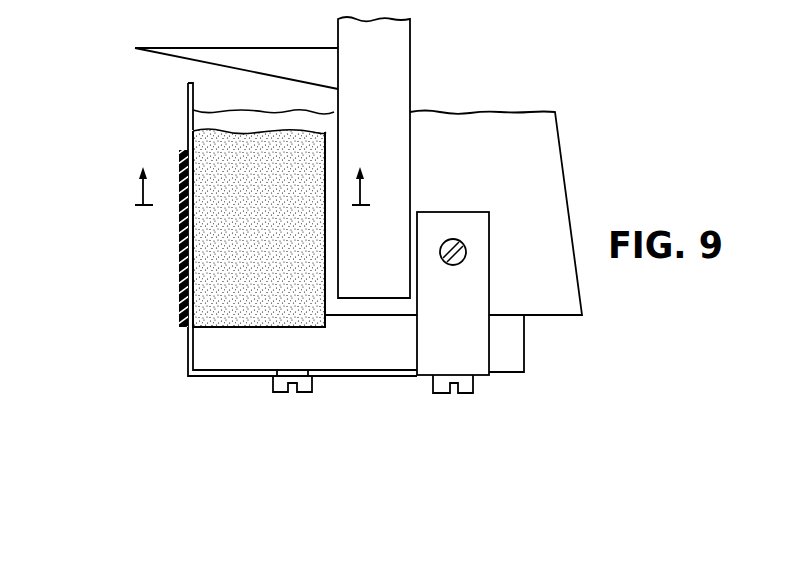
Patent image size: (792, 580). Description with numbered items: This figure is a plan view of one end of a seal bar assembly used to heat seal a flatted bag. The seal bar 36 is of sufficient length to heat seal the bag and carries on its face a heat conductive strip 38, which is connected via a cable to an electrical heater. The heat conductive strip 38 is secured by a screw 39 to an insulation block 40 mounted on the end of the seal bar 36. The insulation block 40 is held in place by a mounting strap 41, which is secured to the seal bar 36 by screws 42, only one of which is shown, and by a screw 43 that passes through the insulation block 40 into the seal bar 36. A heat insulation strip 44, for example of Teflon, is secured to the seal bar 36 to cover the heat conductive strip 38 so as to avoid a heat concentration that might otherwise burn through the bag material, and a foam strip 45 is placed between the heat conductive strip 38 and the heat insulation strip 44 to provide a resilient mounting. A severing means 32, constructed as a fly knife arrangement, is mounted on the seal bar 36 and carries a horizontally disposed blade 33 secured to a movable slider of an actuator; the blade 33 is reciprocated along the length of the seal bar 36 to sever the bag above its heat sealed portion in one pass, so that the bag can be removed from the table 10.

The table 10 is at (251, 202).
The severing means 32 is at (403, 70).
The blade 33 is at (286, 53).
The seal bar 36 is at (583, 200).
The heat conductive strip 38 is at (187, 105).
The screw 39 is at (305, 393).
The insulation block 40 is at (517, 360).
The mounting strap 41 is at (488, 300).
The screw 42 is at (468, 255).
The screw 43 is at (466, 393).
The heat insulation strip 44 is at (248, 136).
The foam strip 45 is at (178, 306).